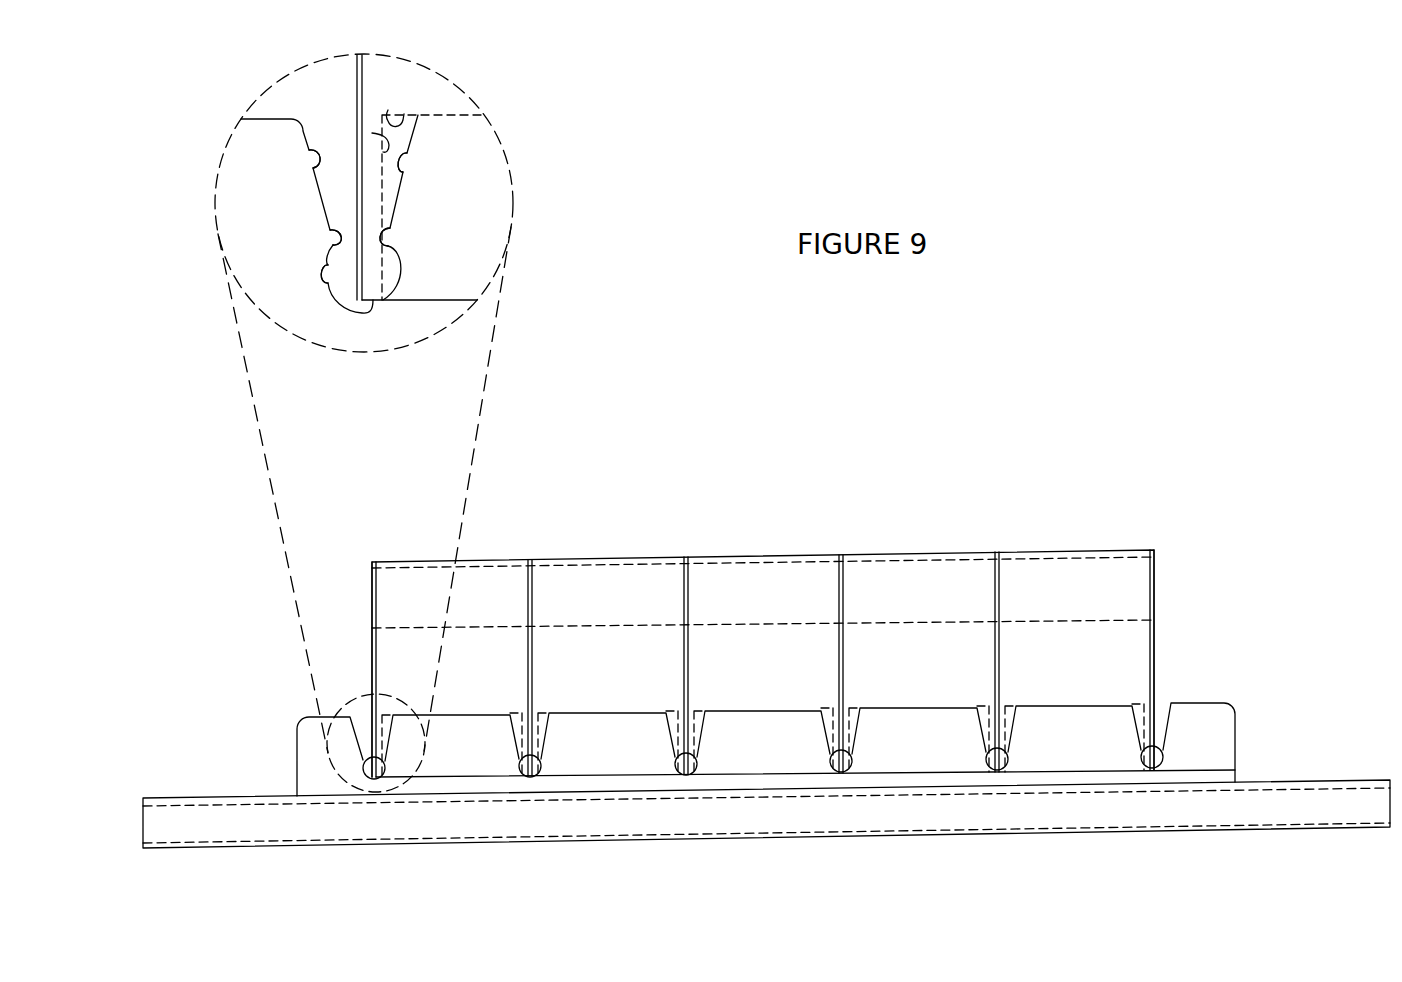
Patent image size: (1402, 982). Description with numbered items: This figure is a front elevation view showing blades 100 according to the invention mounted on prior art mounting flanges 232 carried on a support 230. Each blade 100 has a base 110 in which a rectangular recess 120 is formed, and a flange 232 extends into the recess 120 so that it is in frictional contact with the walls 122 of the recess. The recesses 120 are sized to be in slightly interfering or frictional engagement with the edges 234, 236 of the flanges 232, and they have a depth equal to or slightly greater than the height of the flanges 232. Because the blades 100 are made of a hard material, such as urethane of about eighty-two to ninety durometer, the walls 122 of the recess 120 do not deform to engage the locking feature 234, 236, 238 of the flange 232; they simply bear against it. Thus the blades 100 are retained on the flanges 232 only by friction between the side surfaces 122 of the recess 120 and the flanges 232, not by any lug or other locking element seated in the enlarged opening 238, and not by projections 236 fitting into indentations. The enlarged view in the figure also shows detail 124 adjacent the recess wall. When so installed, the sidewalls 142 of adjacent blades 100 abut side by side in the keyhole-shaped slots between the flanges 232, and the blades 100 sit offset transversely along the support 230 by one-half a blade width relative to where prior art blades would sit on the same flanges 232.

The blade 100 is at (410, 549).
The base 110 is at (372, 312).
The recess 120 is at (418, 303).
The wall 122 is at (372, 133).
The contact hook 124 is at (388, 110).
The sidewall 142 is at (530, 616).
The support 230 is at (210, 797).
The mounting flange 232 is at (266, 118).
The edge 234 is at (312, 153).
The projection 236 is at (333, 236).
The enlarged opening 238 is at (326, 270).